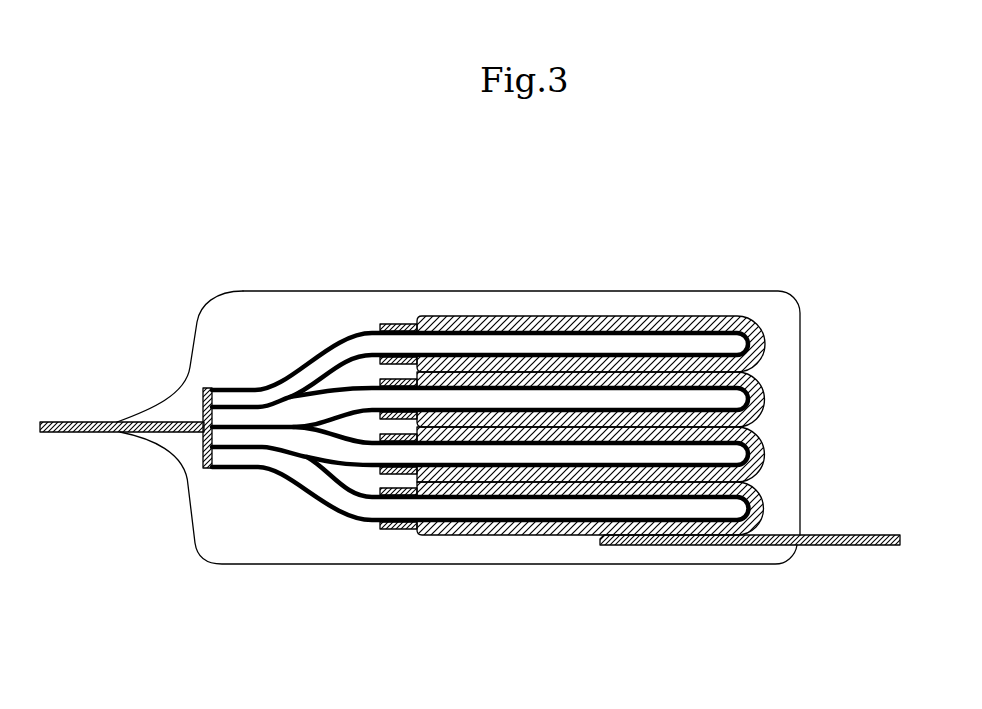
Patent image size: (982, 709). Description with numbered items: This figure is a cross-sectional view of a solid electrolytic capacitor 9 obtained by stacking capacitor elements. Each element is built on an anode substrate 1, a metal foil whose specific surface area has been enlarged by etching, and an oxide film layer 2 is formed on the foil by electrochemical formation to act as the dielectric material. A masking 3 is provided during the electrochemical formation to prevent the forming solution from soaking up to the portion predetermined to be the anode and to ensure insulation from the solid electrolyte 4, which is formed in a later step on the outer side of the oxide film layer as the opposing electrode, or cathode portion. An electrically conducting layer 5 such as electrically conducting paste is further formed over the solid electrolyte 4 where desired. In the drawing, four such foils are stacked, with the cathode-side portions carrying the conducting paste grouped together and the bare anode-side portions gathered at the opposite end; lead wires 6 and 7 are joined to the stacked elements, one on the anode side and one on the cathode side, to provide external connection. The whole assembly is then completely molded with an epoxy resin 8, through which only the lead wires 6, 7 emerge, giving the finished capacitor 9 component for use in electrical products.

The anode substrate 1 is at (232, 398).
The oxide film layer 2 is at (287, 357).
The masking 3 is at (400, 323).
The solid electrolyte 4 is at (470, 317).
The electrically conducting layer 5 is at (203, 470).
The lead wire 6 is at (70, 422).
The lead wire 7 is at (770, 545).
The epoxy resin 8 is at (351, 550).
The capacitor 9 is at (710, 257).